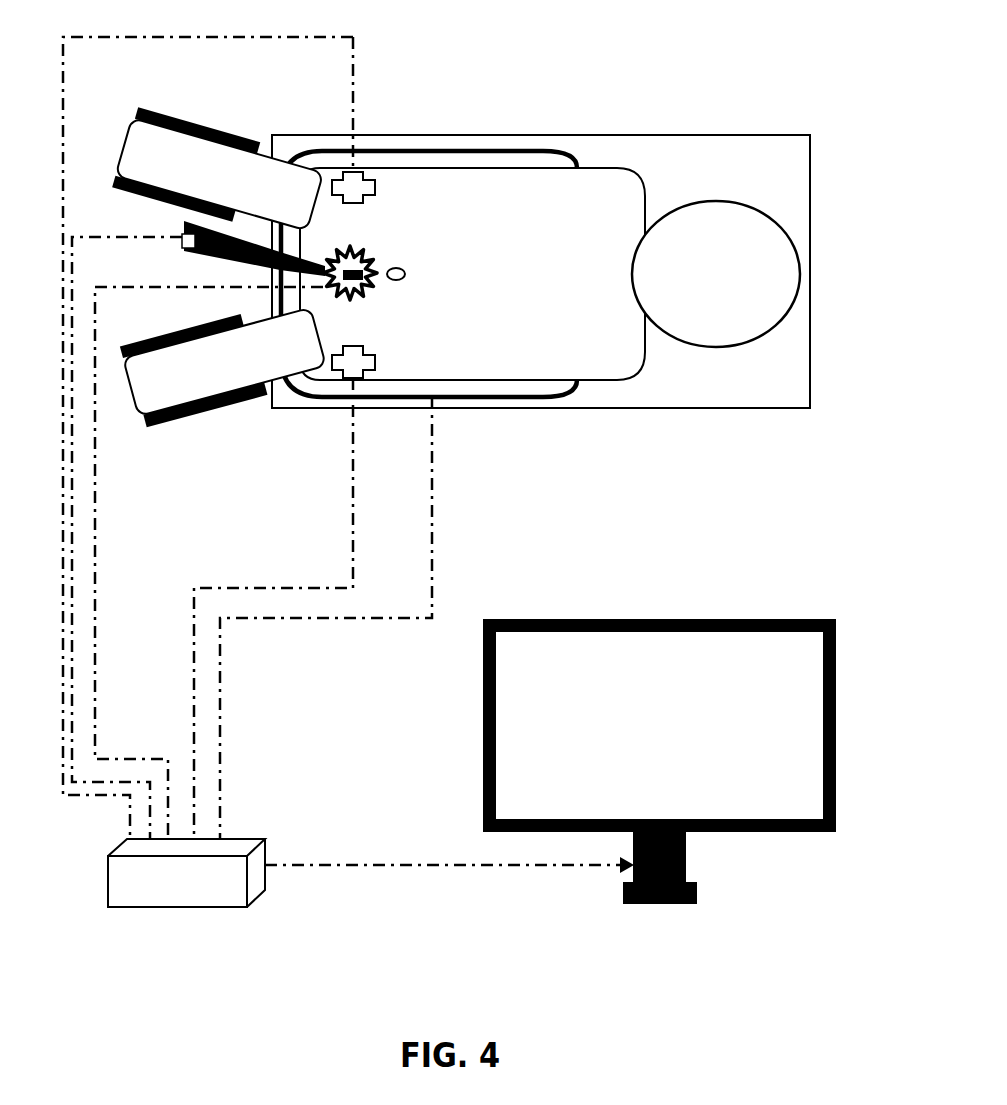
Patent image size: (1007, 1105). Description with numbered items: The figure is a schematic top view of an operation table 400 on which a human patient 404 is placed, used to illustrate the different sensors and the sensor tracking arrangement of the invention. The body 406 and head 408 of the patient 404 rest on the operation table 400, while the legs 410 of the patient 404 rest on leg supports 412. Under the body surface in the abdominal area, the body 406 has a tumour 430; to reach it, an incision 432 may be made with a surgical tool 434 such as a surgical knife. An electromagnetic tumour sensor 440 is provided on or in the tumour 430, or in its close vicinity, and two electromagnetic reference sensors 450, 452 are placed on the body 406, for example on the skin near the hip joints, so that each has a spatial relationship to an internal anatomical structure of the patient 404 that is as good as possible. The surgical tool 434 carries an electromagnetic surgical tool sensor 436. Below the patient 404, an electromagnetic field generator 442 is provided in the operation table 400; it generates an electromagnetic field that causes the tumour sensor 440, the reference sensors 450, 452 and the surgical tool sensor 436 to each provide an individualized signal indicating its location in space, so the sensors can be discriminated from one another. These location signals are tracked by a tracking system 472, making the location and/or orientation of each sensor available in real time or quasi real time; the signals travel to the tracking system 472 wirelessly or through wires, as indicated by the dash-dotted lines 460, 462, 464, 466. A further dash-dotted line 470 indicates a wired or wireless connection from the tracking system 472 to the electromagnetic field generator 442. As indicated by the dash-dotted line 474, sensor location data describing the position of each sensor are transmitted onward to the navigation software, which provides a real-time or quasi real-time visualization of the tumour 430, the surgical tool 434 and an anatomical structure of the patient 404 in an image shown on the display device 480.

The operation table 400 is at (562, 133).
The human patient 404 is at (649, 395).
The body 406 is at (617, 168).
The head 408 is at (747, 203).
The legs 410 is at (135, 148).
The leg supports 412 is at (205, 127).
The tumour 430 is at (378, 263).
The incision 432 is at (403, 279).
The surgical tool 434 is at (242, 258).
The surgical tool sensor 436 is at (188, 238).
The tumour sensor 440 is at (370, 300).
The EM field generator 442 is at (487, 150).
The reference sensor 450 is at (357, 180).
The reference sensor 452 is at (353, 366).
The dash-dotted line 460 is at (95, 498).
The dash-dotted line 462 is at (73, 530).
The dash-dotted line 464 is at (63, 598).
The dash-dotted line 466 is at (353, 510).
The dash-dotted line 470 is at (433, 468).
The tracking system 472 is at (240, 846).
The dash-dotted line 474 is at (365, 866).
The display device 480 is at (703, 619).